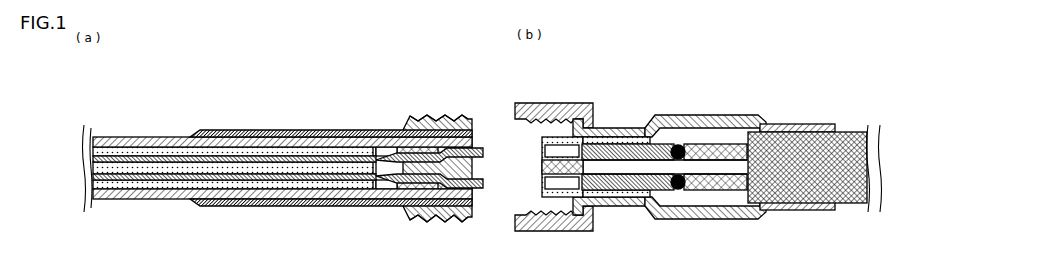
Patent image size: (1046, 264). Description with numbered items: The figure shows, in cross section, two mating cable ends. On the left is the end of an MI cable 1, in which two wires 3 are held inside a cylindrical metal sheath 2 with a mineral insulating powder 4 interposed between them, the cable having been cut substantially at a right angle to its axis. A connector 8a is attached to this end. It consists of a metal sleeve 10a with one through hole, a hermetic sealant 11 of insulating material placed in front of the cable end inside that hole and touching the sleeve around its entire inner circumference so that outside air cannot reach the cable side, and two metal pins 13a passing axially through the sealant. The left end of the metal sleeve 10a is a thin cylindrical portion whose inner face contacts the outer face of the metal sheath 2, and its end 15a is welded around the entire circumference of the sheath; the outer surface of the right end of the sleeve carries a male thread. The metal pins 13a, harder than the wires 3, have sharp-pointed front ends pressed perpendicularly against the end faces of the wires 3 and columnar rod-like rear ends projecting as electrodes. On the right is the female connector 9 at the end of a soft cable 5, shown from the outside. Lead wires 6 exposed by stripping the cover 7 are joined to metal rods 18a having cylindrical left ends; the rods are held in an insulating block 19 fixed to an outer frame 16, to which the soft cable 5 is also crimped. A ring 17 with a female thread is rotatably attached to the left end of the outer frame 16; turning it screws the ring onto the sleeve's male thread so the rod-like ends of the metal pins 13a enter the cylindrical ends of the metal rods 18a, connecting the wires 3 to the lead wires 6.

The MI cable 1 is at (283, 144).
The metal sheath 2 is at (143, 137).
The wires 3 is at (212, 158).
The mineral insulating powder 4 is at (234, 173).
The soft cable 5 is at (848, 107).
The lead wires 6 is at (717, 144).
The cover 7 is at (785, 128).
The connector 8a is at (410, 144).
The female connector 9 is at (698, 148).
The metal sleeve 10a is at (293, 131).
The hermetic sealant 11 is at (431, 173).
The metal pins 13a is at (450, 124).
The end of the cylindrical portion 15a is at (196, 130).
The outer frame 16 is at (675, 219).
The ring 17 is at (546, 103).
The metal rods 18a is at (655, 130).
The block 19 is at (560, 222).